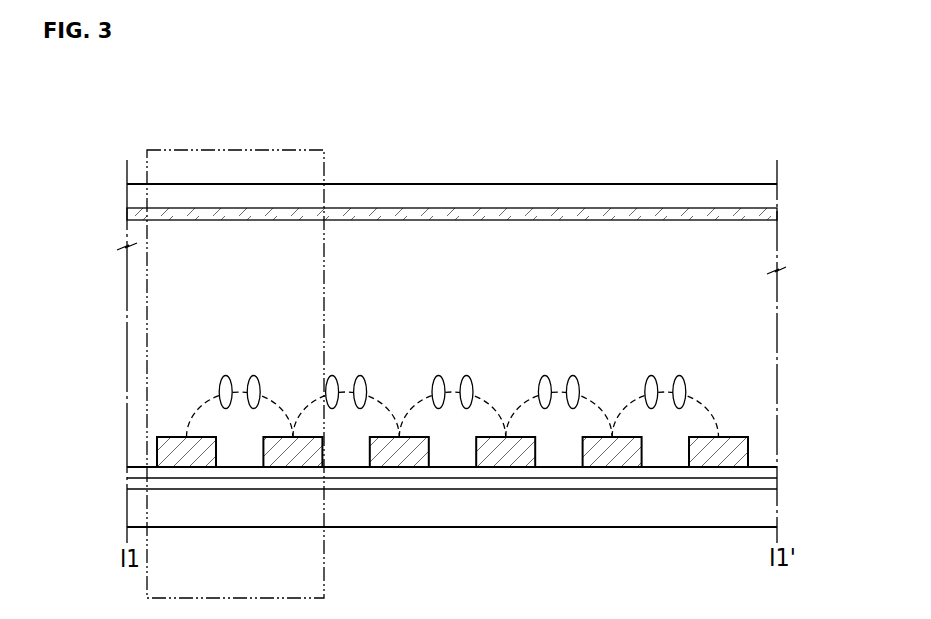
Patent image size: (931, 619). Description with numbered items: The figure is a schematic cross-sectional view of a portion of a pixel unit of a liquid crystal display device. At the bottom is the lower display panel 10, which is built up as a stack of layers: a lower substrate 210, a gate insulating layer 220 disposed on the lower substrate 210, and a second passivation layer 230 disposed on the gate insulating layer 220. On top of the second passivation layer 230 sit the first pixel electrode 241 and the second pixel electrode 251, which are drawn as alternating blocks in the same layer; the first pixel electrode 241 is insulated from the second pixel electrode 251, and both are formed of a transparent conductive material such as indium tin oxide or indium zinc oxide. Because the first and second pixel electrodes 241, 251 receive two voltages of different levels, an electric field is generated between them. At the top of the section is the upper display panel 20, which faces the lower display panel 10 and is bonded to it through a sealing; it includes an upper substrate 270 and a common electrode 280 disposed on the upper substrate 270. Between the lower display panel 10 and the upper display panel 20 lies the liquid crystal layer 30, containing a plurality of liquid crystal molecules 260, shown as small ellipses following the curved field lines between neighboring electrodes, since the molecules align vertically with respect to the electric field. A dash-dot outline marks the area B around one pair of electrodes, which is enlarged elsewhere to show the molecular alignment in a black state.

The lower display panel 10 is at (783, 467).
The upper display panel 20 is at (783, 184).
The liquid crystal layer 30 is at (783, 220).
The lower substrate 210 is at (127, 514).
The gate insulating layer 220 is at (128, 484).
The second passivation layer 230 is at (133, 473).
The first pixel electrode 241 is at (186, 452).
The second pixel electrode 251 is at (293, 452).
The liquid crystal molecules 260 is at (254, 375).
The upper substrate 270 is at (134, 196).
The common electrode 280 is at (134, 216).
The area B is at (235, 150).